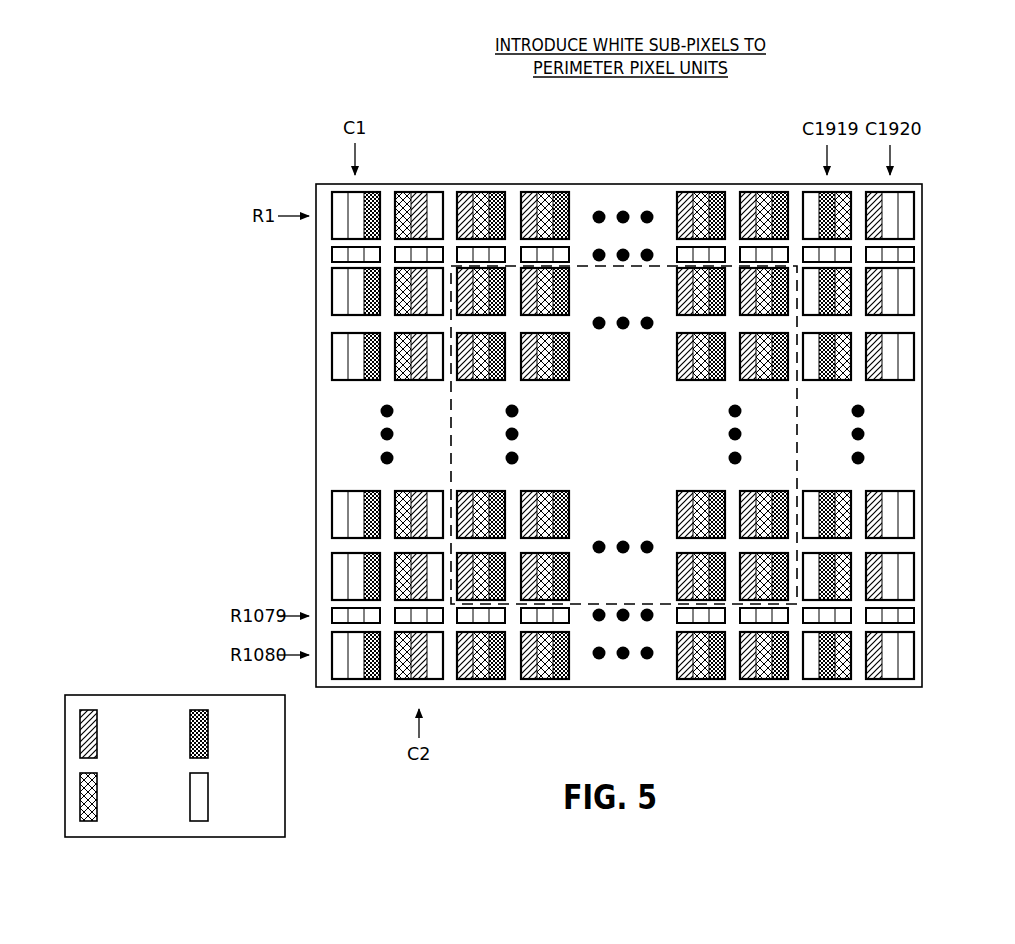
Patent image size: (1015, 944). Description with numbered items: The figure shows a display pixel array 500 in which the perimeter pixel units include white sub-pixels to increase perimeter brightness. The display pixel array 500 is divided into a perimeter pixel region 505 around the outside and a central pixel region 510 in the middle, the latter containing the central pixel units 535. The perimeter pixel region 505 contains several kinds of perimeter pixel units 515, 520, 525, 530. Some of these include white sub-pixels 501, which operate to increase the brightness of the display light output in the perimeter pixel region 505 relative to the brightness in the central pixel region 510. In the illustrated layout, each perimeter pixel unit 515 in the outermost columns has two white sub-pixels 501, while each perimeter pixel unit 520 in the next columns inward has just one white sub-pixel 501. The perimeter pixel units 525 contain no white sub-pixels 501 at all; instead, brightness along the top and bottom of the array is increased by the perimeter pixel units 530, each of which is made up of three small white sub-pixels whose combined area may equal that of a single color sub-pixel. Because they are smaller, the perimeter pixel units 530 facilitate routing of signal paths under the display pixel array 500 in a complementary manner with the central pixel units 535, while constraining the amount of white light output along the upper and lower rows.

The display pixel array 500 is at (968, 120).
The white sub-pixels 501 is at (200, 821).
The perimeter pixel region 505 is at (638, 247).
The central pixel region 510 is at (590, 442).
The perimeter pixel unit 515 is at (373, 183).
The perimeter pixel unit 520 is at (439, 183).
The perimeter pixel unit 525 is at (579, 198).
The perimeter pixel unit 530 is at (323, 257).
The central pixel units 535 is at (672, 374).